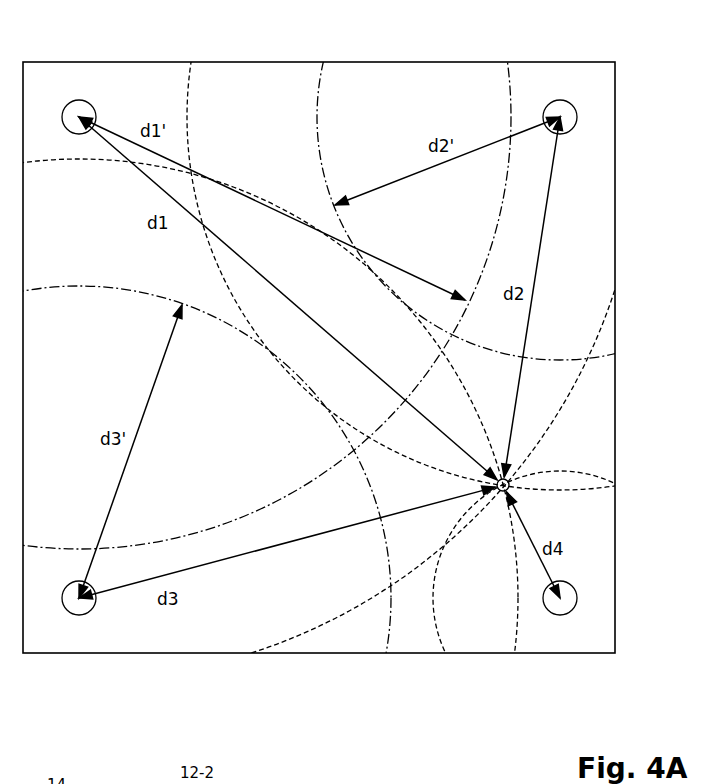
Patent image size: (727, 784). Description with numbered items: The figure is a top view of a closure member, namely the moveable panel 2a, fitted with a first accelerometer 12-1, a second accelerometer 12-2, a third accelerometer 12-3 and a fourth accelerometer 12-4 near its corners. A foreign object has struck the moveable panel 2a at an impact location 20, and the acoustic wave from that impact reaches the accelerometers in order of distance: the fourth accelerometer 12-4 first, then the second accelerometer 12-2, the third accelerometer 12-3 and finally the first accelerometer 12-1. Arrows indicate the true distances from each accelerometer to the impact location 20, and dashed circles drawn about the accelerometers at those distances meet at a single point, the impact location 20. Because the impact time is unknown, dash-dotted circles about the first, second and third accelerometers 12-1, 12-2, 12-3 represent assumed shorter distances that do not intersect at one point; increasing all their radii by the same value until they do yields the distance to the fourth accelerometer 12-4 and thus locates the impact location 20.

The moveable panel 2a is at (615, 232).
The first accelerometer 12-1 is at (88, 103).
The second accelerometer 12-2 is at (565, 107).
The third accelerometer 12-3 is at (77, 607).
The fourth accelerometer 12-4 is at (565, 607).
The impact location 20 is at (535, 467).